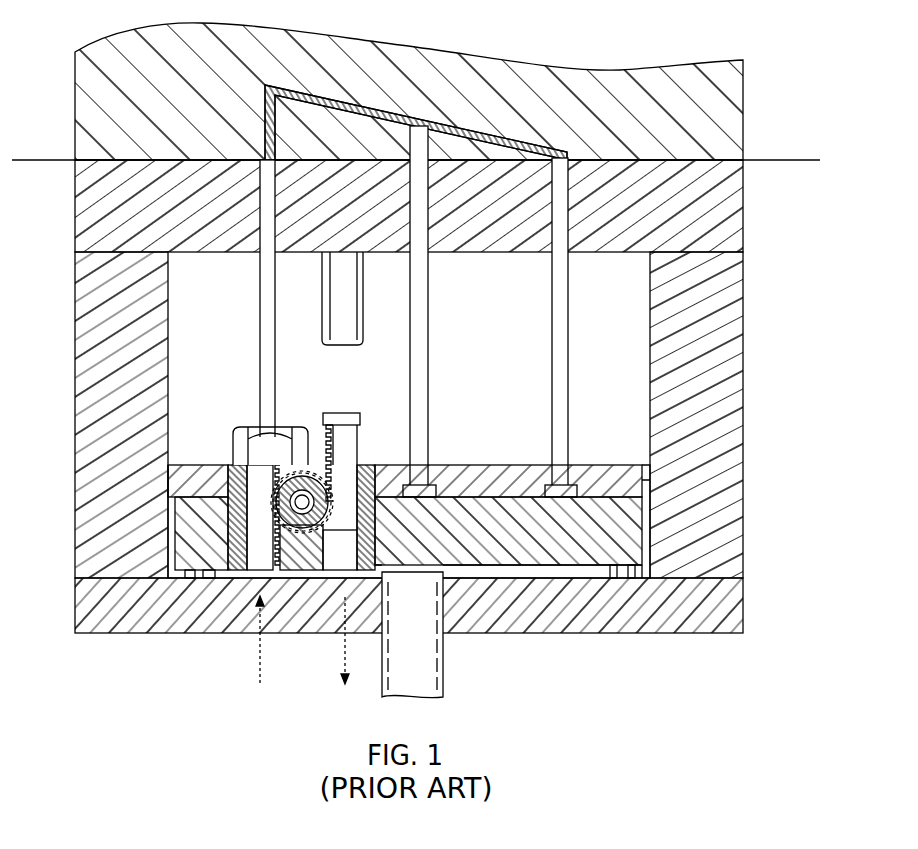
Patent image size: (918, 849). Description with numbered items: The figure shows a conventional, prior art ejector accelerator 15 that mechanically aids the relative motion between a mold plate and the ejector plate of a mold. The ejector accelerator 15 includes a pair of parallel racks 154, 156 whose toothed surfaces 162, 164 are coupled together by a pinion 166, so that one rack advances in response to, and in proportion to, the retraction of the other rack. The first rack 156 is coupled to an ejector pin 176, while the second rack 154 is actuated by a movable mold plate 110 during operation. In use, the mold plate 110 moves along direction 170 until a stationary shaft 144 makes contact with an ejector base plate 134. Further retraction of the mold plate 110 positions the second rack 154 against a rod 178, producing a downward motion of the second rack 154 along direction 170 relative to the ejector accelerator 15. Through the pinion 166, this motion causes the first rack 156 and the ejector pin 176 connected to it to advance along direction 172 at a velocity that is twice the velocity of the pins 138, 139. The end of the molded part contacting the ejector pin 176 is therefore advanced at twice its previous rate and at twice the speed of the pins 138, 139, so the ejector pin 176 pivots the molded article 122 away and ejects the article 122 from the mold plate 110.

The movable mold plate 110 is at (744, 458).
The molded article 122 is at (356, 105).
The ejector pin 176 is at (261, 297).
The pin 139 is at (429, 303).
The pin 138 is at (569, 312).
The rod 178 is at (365, 322).
The ejector accelerator 15 is at (472, 402).
The ejector base plate 134 is at (627, 527).
The pinion 166 is at (306, 500).
The toothed surface 162 is at (324, 446).
The second rack 154 is at (361, 428).
The first rack 156 is at (227, 480).
The toothed surface 164 is at (312, 572).
The stationary shaft 144 is at (433, 650).
The direction 172 is at (257, 660).
The direction 170 is at (343, 662).